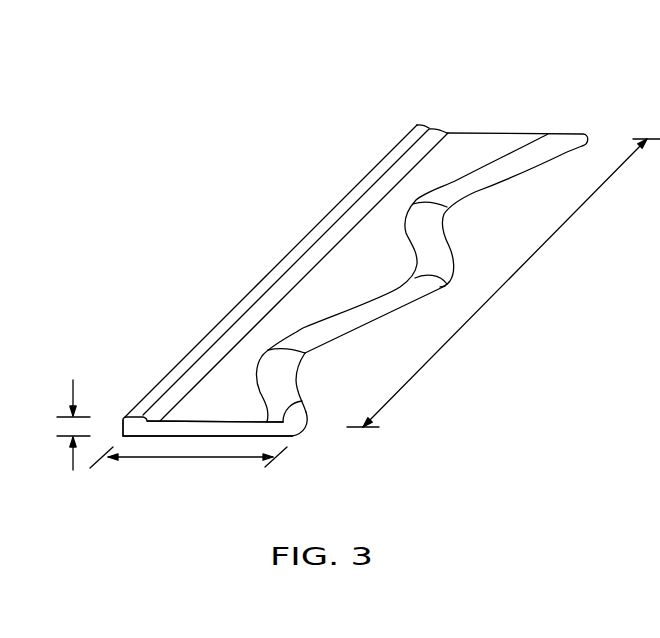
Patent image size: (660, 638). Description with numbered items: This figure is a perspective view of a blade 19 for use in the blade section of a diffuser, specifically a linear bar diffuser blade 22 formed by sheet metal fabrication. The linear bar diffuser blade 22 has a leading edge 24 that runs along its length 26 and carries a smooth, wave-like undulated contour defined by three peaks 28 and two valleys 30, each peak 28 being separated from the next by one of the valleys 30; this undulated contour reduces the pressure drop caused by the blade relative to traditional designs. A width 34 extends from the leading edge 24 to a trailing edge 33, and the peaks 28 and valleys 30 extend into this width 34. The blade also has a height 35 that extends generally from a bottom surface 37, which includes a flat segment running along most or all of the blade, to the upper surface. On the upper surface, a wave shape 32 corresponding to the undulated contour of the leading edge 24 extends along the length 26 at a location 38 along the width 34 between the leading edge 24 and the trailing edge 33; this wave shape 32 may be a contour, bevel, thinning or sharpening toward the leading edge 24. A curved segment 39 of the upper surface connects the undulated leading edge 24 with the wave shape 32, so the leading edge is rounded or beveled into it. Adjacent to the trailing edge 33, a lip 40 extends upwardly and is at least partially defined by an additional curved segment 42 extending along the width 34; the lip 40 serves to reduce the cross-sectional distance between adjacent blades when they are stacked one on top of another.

The blade 19 is at (374, 283).
The linear bar diffuser blade 22 is at (351, 320).
The leading edge 24 is at (310, 420).
The length 26 is at (505, 284).
The peaks 28 is at (312, 436).
The valleys 30 is at (314, 359).
The wave shape 32 is at (302, 326).
The trailing edge 33 is at (122, 430).
The width 34 is at (188, 463).
The height 35 is at (72, 462).
The bottom surface 37 is at (197, 437).
The location 38 is at (267, 422).
The curved segment 39 is at (303, 402).
The lip 40 is at (150, 393).
The additional curved segment 42 is at (224, 345).